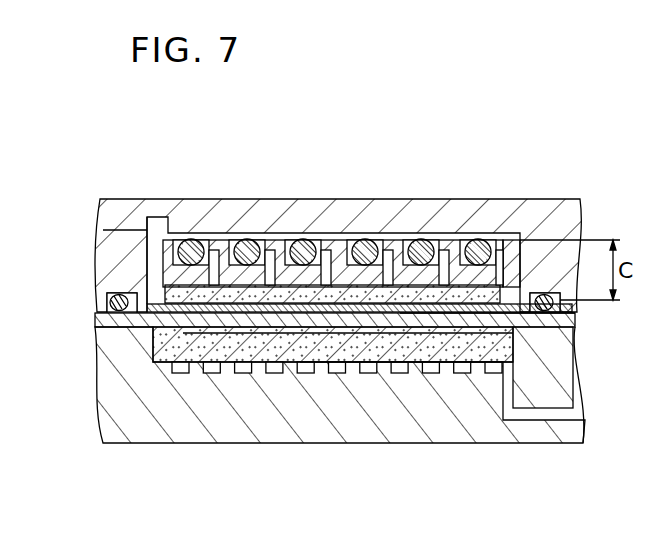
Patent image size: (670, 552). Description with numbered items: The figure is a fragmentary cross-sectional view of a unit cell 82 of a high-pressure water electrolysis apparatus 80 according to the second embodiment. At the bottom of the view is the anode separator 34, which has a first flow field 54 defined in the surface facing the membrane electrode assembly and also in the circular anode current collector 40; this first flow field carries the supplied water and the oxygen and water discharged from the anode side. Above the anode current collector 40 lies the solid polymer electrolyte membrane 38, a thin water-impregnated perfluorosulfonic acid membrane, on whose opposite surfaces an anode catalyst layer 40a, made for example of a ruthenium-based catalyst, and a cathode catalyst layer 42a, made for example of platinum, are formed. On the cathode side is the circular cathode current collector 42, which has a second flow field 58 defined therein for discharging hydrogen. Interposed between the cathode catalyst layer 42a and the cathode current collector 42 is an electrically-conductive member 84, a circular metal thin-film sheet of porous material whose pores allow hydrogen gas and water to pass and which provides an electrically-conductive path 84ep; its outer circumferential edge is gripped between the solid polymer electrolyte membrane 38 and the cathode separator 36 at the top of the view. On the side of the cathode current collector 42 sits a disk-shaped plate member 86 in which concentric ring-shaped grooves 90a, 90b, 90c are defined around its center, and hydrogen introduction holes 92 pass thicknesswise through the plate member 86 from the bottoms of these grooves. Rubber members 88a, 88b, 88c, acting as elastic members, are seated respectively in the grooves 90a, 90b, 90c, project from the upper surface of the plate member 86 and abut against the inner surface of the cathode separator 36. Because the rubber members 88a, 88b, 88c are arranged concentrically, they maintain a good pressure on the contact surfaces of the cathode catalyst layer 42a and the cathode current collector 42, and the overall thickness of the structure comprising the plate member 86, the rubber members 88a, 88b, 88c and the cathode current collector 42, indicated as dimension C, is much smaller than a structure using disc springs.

The anode separator 34 is at (582, 373).
The cathode separator 36 is at (582, 214).
The solid polymer electrolyte membrane 38 is at (352, 336).
The anode current collector 40 is at (416, 340).
The anode catalyst layer 40a is at (388, 331).
The cathode current collector 42 is at (237, 320).
The cathode catalyst layer 42a is at (450, 313).
The first flow field 54 is at (180, 360).
The second flow field 58 is at (333, 364).
The high-pressure water electrolysis apparatus 80 is at (333, 194).
The unit cell 82 is at (333, 194).
The electrically-conductive member 84 is at (170, 303).
The electrically-conductive path 84ep is at (166, 308).
The plate member 86 is at (505, 238).
The rubber member 88a is at (366, 239).
The rubber member 88b is at (421, 239).
The rubber member 88c is at (478, 239).
The ring-shaped groove 90a is at (304, 239).
The ring-shaped groove 90b is at (250, 239).
The ring-shaped groove 90c is at (192, 239).
The hydrogen introduction hole 92 is at (326, 252).